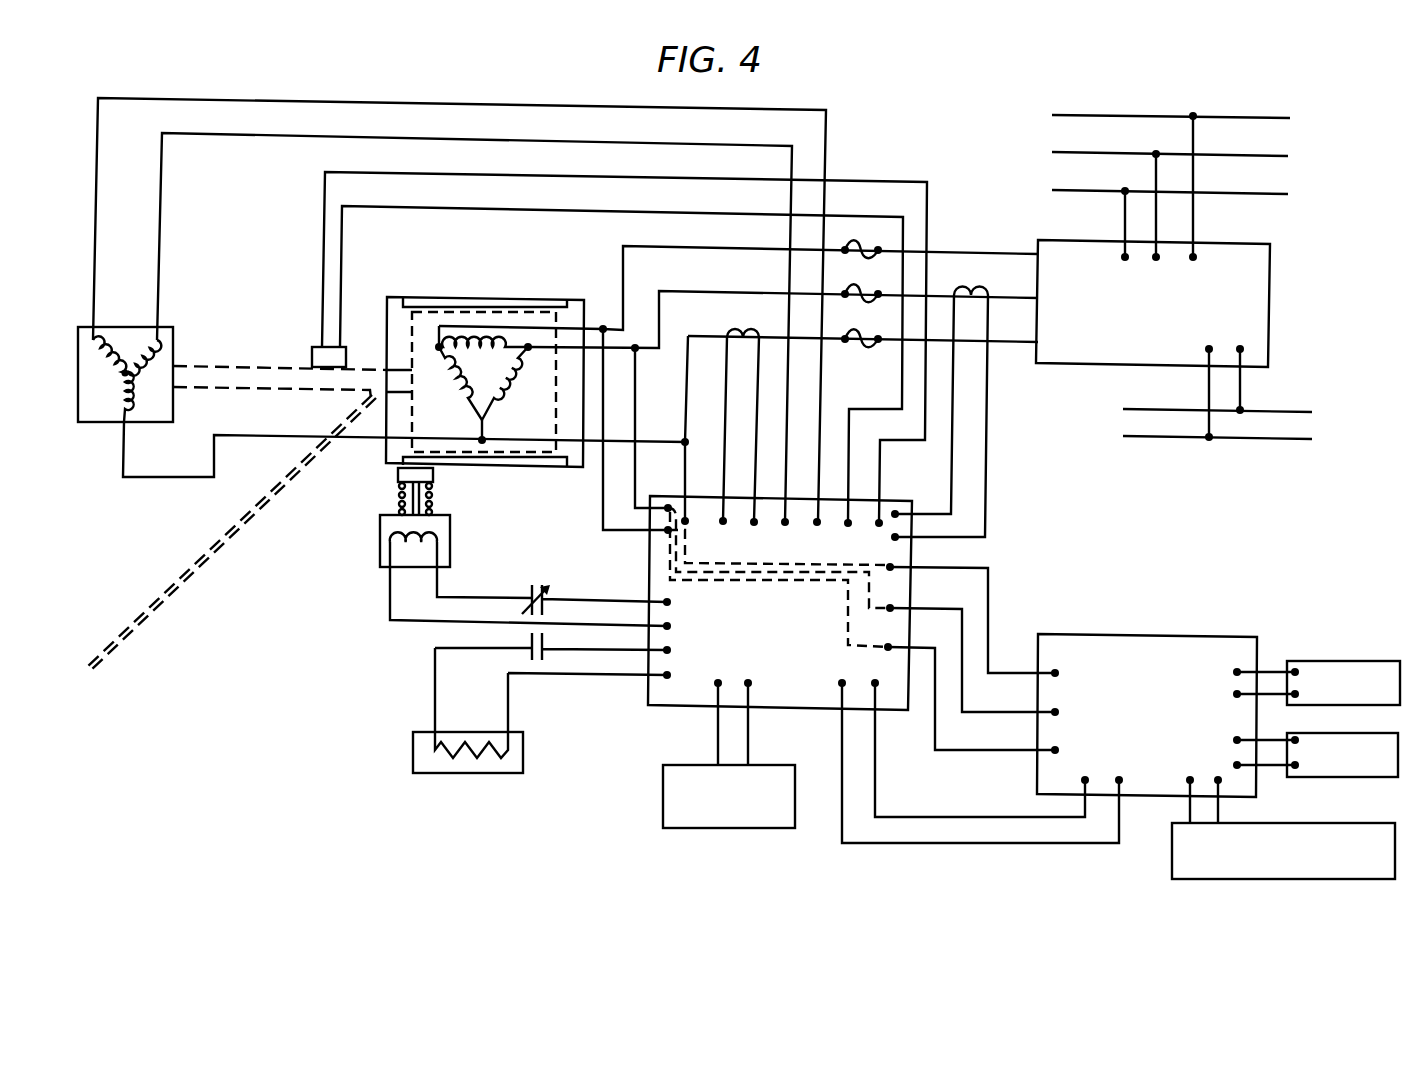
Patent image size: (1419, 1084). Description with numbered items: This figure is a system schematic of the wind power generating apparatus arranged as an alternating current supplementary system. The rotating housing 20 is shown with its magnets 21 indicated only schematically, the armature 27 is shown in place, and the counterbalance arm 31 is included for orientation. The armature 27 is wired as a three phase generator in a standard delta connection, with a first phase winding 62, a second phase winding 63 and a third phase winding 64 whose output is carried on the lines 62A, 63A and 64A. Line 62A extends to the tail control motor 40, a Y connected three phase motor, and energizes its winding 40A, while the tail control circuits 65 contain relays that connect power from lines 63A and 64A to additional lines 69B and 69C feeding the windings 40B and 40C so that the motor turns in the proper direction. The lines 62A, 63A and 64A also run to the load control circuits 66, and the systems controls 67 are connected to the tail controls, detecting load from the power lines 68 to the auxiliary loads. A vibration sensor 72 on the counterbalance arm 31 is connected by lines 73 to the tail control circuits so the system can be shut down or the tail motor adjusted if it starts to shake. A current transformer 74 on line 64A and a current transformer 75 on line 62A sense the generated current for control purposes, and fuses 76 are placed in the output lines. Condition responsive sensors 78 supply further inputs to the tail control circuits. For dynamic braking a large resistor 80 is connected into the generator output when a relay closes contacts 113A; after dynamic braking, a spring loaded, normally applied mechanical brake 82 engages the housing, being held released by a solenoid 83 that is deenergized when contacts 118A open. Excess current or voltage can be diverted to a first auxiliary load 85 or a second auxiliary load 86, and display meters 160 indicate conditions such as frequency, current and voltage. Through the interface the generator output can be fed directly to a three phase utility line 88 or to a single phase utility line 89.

The rotating housing 20 is at (592, 298).
The magnets 21 is at (411, 299).
The armature 27 is at (502, 322).
The counterbalance arm 31 is at (294, 392).
The tail control motor 40 is at (175, 330).
The winding 40A is at (121, 408).
The winding 40B is at (161, 355).
The winding 40C is at (112, 348).
The first phase winding 62 is at (510, 392).
The second phase winding 63 is at (448, 392).
The third phase winding 64 is at (477, 345).
The line 62A is at (217, 456).
The line 63A is at (652, 246).
The line 64A is at (686, 290).
The tail control circuits 65 is at (914, 552).
The load control circuits 66 is at (1272, 246).
The systems controls 67 is at (1125, 635).
The power lines 68 is at (937, 665).
The line 69B is at (696, 147).
The line 69C is at (828, 139).
The vibration sensor 72 is at (312, 353).
The lines 73 is at (906, 218).
The current transformer 74 is at (982, 292).
The current transformer 75 is at (741, 327).
The fuses 76 is at (858, 260).
The condition responsive sensors 78 is at (685, 828).
The resistor 80 is at (413, 752).
The mechanical brake 82 is at (385, 500).
The solenoid 83 is at (450, 541).
The first auxiliary load 85 is at (1330, 662).
The second auxiliary load 86 is at (1320, 777).
The three phase utility line 88 is at (1275, 192).
The single phase utility line 89 is at (1318, 428).
The contacts 113A is at (525, 651).
The contacts 118A is at (548, 593).
The display meters 160 is at (1172, 860).